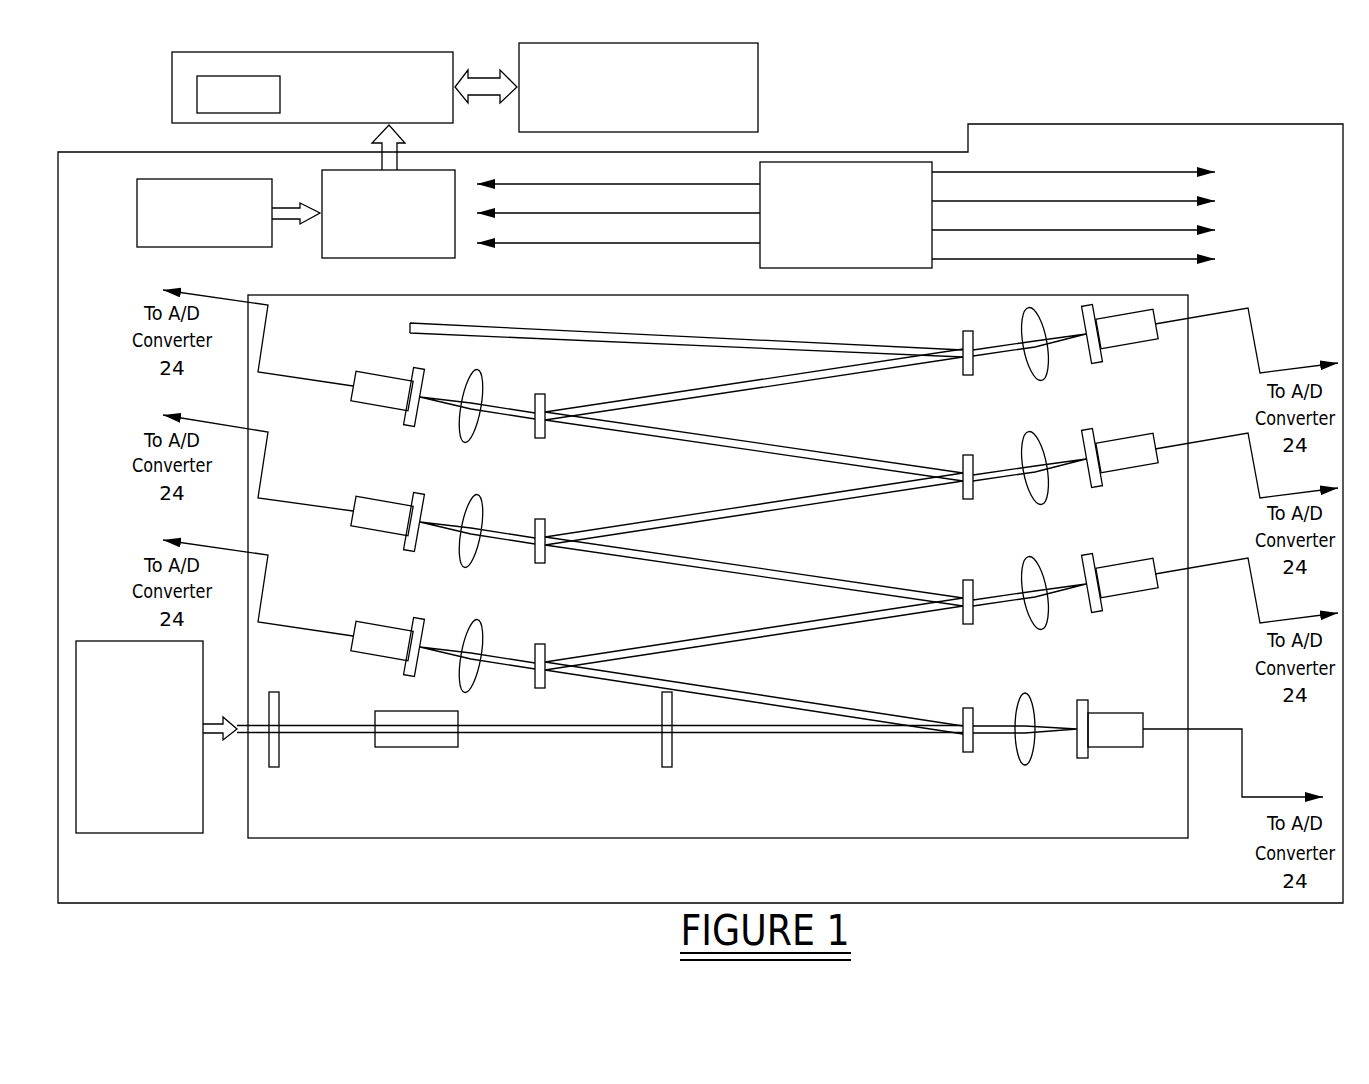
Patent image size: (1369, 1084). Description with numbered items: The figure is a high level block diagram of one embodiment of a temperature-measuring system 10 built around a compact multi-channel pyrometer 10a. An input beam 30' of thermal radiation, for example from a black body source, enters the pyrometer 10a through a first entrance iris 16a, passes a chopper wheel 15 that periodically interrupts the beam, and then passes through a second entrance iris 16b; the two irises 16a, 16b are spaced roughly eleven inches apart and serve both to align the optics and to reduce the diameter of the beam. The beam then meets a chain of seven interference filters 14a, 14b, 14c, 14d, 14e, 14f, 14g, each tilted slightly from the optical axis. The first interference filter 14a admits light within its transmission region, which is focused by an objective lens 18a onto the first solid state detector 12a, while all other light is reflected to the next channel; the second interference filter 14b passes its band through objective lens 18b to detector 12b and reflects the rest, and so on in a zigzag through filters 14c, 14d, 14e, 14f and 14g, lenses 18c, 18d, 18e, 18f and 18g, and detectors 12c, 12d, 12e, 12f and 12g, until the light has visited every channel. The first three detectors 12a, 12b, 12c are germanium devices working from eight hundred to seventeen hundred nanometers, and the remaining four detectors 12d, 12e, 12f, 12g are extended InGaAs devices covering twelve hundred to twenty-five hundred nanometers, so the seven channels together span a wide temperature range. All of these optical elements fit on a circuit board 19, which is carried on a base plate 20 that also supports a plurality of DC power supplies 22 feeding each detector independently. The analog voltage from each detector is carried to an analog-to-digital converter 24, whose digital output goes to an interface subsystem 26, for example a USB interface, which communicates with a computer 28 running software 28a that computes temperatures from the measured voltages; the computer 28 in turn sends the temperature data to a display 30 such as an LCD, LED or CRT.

The system 10 is at (1035, 102).
The pyrometer 10a is at (492, 840).
The solid state detector 12a is at (1122, 748).
The solid state detector 12b is at (365, 629).
The solid state detector 12c is at (1138, 562).
The solid state detector 12d is at (365, 504).
The solid state detector 12e is at (1138, 437).
The solid state detector 12f is at (365, 379).
The solid state detector 12g is at (1142, 317).
The interference filter 14a is at (975, 742).
The interference filter 14b is at (546, 672).
The interference filter 14c is at (962, 588).
The interference filter 14d is at (546, 547).
The interference filter 14e is at (962, 463).
The interference filter 14f is at (546, 422).
The interference filter 14g is at (962, 338).
The chopper wheel 15 is at (435, 748).
The entrance iris 16a is at (275, 768).
The entrance iris 16b is at (668, 769).
The objective lens 18a is at (1026, 757).
The objective lens 18b is at (466, 627).
The objective lens 18c is at (1028, 622).
The objective lens 18d is at (466, 502).
The objective lens 18e is at (1028, 497).
The objective lens 18f is at (466, 377).
The objective lens 18g is at (1028, 372).
The circuit board 19 is at (806, 754).
The base plate 20 is at (367, 893).
The DC power supplies 22 is at (835, 232).
The analog-to-digital converter 24 is at (193, 232).
The interface subsystem 26 is at (377, 252).
The computer 28 is at (351, 109).
The software 28a is at (197, 84).
The display 30 is at (638, 87).
The input beam 30' is at (160, 737).